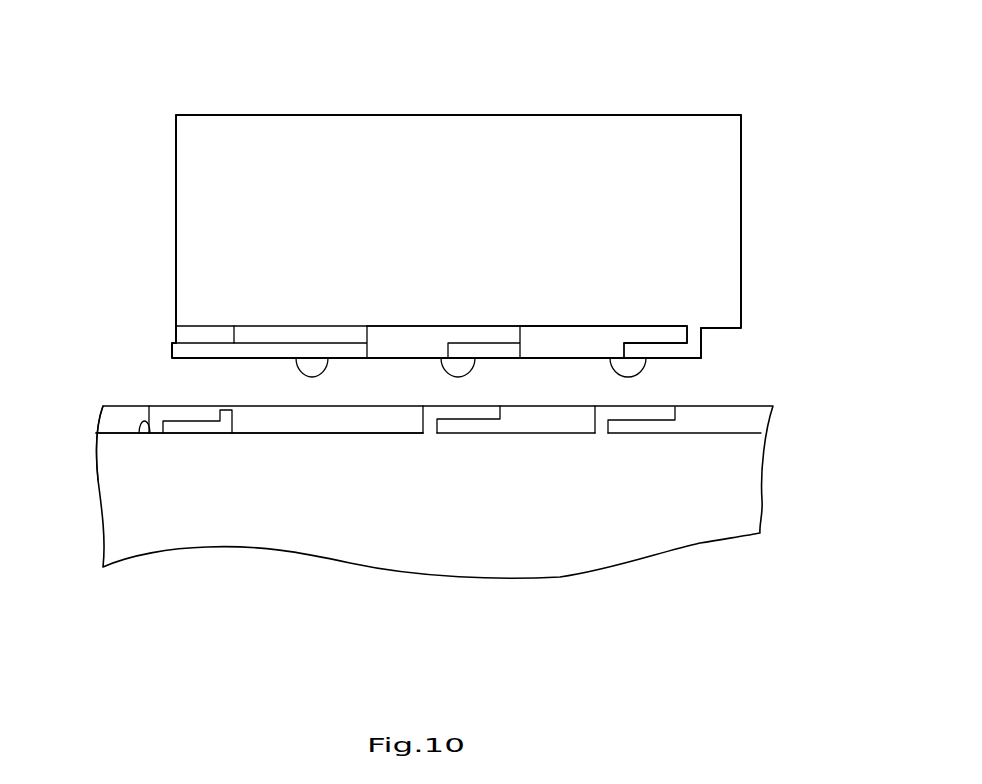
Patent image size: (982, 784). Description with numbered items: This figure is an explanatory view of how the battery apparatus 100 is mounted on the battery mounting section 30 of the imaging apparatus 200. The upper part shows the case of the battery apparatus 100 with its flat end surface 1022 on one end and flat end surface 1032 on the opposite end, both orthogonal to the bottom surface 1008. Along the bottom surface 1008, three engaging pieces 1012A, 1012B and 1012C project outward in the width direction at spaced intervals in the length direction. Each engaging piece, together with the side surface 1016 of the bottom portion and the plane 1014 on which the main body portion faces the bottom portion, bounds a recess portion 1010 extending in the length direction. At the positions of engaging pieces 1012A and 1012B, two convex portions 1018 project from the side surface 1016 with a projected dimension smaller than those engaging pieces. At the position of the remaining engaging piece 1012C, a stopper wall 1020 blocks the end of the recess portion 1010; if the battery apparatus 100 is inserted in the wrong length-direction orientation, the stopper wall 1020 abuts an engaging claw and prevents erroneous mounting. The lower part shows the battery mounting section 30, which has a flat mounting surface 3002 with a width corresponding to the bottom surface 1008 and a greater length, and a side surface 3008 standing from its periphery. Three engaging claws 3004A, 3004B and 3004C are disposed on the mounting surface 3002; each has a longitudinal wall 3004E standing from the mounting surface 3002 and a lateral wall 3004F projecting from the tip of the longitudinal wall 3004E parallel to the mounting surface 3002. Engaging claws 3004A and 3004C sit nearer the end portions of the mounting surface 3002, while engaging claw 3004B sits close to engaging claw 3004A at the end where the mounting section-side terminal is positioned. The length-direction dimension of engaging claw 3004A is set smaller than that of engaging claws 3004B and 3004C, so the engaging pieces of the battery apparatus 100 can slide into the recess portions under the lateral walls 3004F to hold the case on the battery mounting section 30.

The battery apparatus 100 is at (396, 112).
The end surface 1022 is at (176, 163).
The end surface 1032 is at (741, 158).
The recess portion 1010 is at (213, 332).
The convex portion 1018 is at (266, 342).
The engaging piece 1012A is at (326, 364).
The side surface 1016 is at (393, 340).
The engaging piece 1012B is at (440, 330).
The plane 1014 is at (565, 328).
The engaging piece 1012C is at (610, 358).
The stopper wall 1020 is at (701, 338).
The bottom surface 1008 is at (577, 358).
The battery mounting section 30 is at (126, 403).
The mounting surface 3002 is at (322, 433).
The imaging apparatus 200 is at (130, 485).
The side surface 3008 is at (403, 433).
The engaging claw 3004A is at (223, 407).
The engaging claw 3004B is at (478, 406).
The engaging claw 3004C is at (660, 406).
The longitudinal wall 3004E is at (144, 435).
The lateral wall 3004F is at (186, 422).